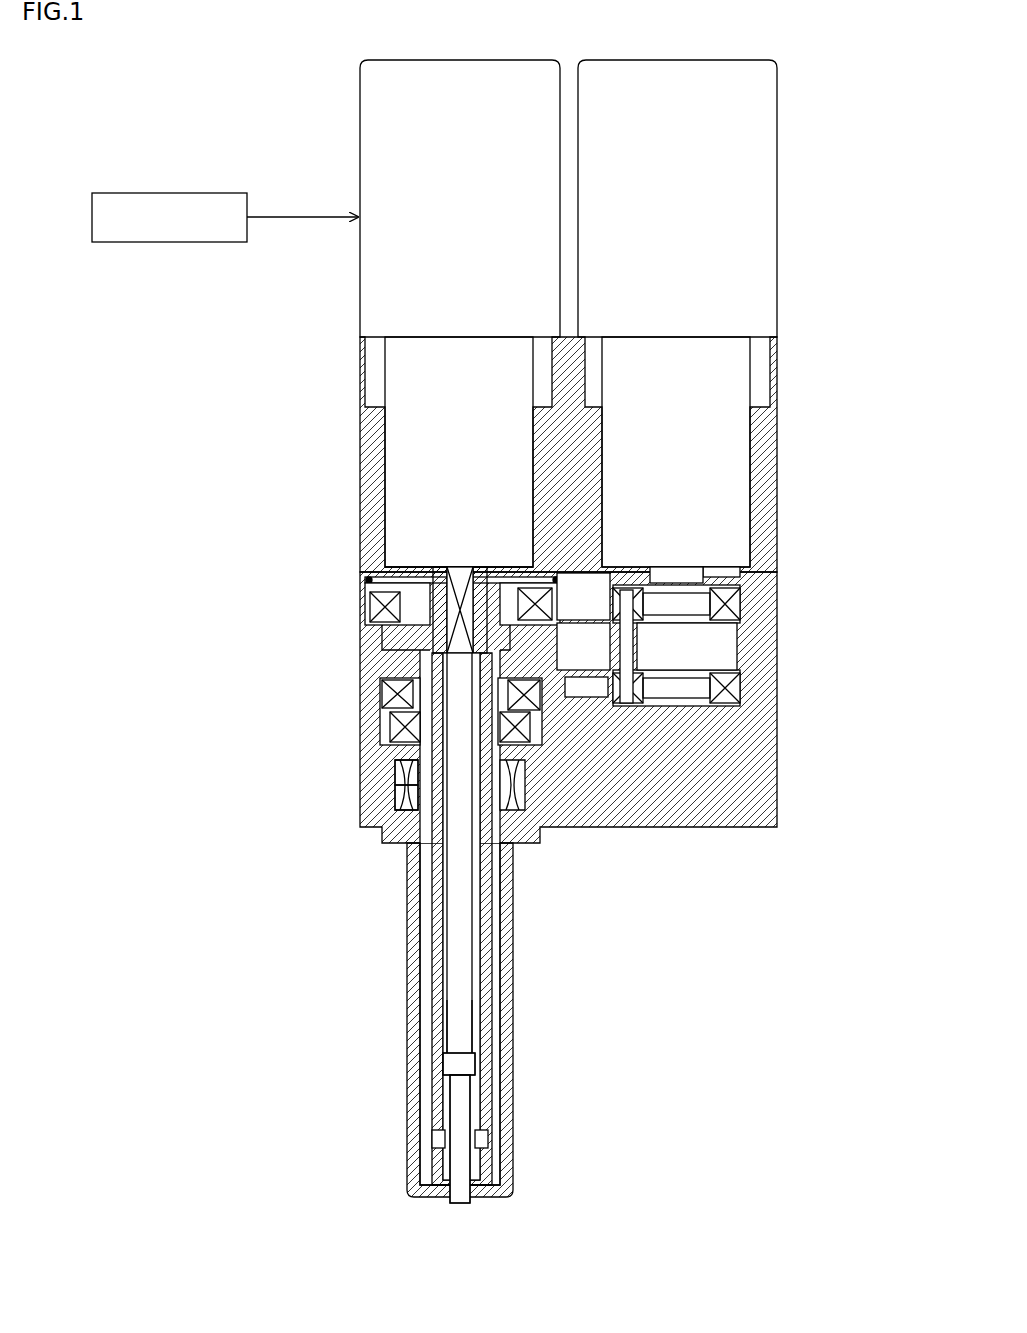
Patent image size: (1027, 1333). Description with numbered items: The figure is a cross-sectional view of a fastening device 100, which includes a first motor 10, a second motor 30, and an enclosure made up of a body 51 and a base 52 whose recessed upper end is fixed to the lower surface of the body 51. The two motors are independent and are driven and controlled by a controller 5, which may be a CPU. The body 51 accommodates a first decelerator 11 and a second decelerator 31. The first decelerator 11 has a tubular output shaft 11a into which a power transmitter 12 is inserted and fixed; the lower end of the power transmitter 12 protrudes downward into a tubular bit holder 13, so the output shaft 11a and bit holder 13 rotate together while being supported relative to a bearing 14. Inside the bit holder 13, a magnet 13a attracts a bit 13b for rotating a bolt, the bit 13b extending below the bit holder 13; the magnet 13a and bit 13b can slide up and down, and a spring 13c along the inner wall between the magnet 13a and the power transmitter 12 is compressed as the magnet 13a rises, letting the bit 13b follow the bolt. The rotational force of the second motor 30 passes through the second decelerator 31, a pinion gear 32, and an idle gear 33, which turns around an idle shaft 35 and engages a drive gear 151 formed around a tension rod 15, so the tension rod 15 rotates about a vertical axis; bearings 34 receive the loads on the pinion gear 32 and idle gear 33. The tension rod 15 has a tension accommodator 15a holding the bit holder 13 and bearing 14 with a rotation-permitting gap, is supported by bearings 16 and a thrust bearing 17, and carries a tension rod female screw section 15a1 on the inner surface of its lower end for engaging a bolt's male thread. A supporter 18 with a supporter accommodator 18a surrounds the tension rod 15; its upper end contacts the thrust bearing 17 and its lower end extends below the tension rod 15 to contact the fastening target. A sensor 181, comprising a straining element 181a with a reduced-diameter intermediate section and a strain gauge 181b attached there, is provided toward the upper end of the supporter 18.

The fastening device 100 is at (342, 98).
The controller 5 is at (203, 193).
The first motor 10 is at (388, 160).
The second motor 30 is at (765, 157).
The first decelerator 11 is at (385, 423).
The second decelerator 31 is at (718, 412).
The output shaft 11a is at (430, 568).
The power transmitter 12 is at (366, 586).
The bit holder 13 is at (445, 900).
The magnet 13a is at (477, 1066).
The bit 13b is at (468, 1112).
The spring 13c is at (482, 1050).
The bearing 14 is at (432, 628).
The tension rod 15 is at (435, 905).
The tension accommodator 15a is at (426, 695).
The tension rod female screw section 15a1 is at (432, 1198).
The bearings 16 is at (360, 688).
The thrust bearing 17 is at (385, 712).
The supporter 18 is at (410, 975).
The supporter accommodator 18a is at (420, 1018).
The sensor 181 is at (240, 770).
The straining element 181a is at (395, 766).
The strain gauge 181b is at (395, 800).
The drive gear 151 is at (548, 680).
The pinion gear 32 is at (668, 655).
The idle gear 33 is at (597, 648).
The bearings 34 is at (740, 692).
The idle shaft 35 is at (585, 690).
The body 51 is at (777, 465).
The base 52 is at (777, 645).